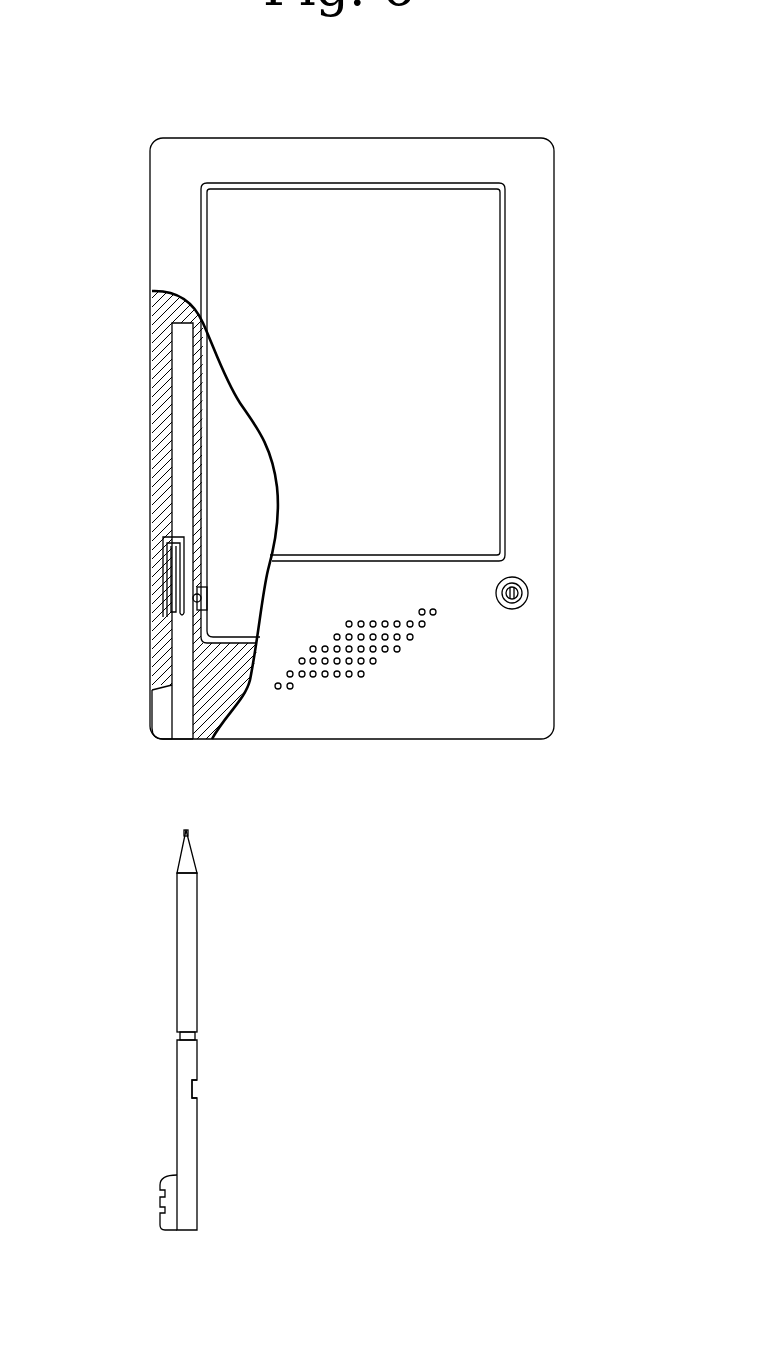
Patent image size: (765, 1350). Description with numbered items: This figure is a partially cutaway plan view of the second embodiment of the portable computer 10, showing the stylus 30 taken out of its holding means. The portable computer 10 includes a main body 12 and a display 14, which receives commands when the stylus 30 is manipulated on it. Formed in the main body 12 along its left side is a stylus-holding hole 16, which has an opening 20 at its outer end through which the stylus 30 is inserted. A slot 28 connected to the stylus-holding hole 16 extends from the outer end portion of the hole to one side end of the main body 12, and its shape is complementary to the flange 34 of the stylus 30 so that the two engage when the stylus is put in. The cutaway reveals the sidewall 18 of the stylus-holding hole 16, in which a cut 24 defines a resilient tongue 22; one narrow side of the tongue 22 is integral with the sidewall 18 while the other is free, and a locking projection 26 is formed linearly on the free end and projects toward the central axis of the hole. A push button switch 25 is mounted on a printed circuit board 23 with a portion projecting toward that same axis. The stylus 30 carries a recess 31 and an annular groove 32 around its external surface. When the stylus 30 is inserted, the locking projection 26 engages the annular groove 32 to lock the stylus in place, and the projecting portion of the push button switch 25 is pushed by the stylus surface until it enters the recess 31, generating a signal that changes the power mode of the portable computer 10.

The portable computer 10 is at (114, 80).
The main body 12 is at (460, 722).
The display 14 is at (485, 351).
The stylus-holding hole 16 is at (180, 422).
The sidewall 18 is at (170, 459).
The opening 20 is at (180, 740).
The resilient tongue 22 is at (168, 580).
The printed circuit board 23 is at (233, 490).
The cut 24 is at (162, 557).
The push button switch 25 is at (193, 598).
The locking projection 26 is at (160, 536).
The slot 28 is at (165, 725).
The stylus 30 is at (193, 1135).
The recess 31 is at (199, 1089).
The annular groove 32 is at (198, 1035).
The flange 34 is at (168, 1197).